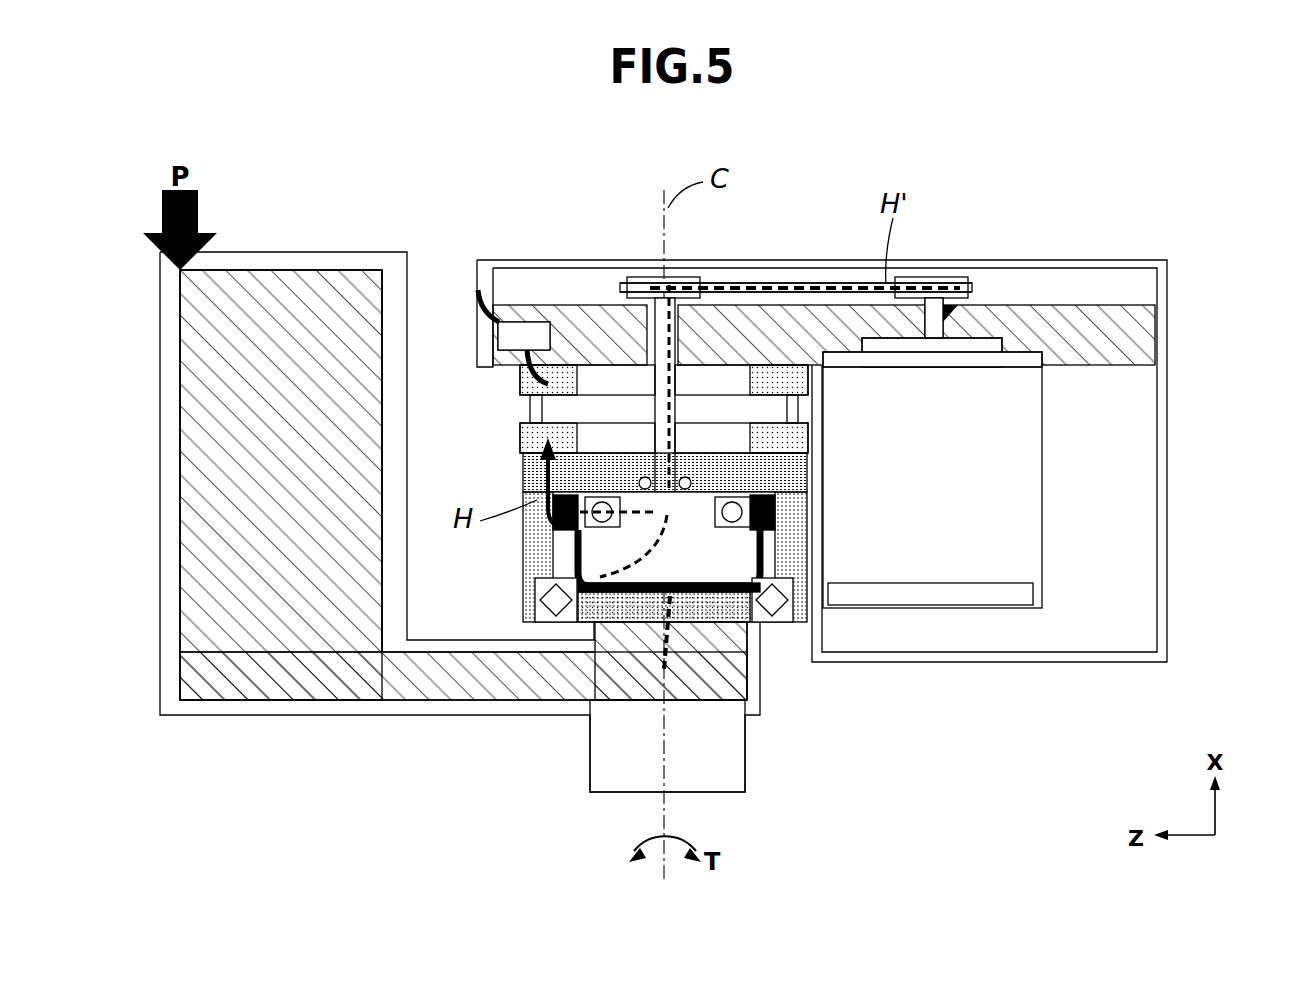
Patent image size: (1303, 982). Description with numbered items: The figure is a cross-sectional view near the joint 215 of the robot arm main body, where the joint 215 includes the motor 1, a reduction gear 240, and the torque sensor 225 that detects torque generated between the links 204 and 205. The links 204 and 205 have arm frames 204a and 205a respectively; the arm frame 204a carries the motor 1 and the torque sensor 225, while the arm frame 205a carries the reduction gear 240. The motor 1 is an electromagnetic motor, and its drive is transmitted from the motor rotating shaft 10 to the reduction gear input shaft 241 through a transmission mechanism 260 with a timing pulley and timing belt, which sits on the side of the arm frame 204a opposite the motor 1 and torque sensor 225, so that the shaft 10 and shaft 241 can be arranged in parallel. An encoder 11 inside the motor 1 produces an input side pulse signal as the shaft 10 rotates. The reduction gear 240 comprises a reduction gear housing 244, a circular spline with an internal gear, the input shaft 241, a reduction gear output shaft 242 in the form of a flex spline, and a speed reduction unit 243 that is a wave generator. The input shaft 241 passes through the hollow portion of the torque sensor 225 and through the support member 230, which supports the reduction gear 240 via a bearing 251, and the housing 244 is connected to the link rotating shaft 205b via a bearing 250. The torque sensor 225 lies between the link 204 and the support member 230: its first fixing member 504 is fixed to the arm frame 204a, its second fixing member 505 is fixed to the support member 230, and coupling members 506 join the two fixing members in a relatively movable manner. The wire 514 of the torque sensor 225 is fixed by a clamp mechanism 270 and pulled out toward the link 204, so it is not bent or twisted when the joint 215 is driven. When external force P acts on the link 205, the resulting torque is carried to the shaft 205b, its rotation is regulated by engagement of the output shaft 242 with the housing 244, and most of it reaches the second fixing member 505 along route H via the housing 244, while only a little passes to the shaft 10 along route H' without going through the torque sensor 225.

The joint 215 is at (340, 130).
The link 205 is at (140, 692).
The arm frame 205a is at (222, 418).
The link rotating shaft 205b is at (718, 640).
The link 204 is at (1203, 264).
The arm frame 204a is at (1132, 355).
The clamp mechanism 270 is at (527, 335).
The wire 514 is at (478, 291).
The transmission mechanism 260 is at (797, 274).
The motor rotating shaft 10 is at (950, 325).
The motor 1 is at (1012, 487).
The encoder 11 is at (1002, 600).
The reduction gear input shaft 241 is at (658, 335).
The torque sensor 225 is at (448, 465).
The first fixing member 504 is at (519, 384).
The coupling members 506 is at (530, 408).
The second fixing member 505 is at (530, 440).
The support member 230 is at (522, 474).
The reduction gear 240 is at (510, 550).
The bearing 250 is at (598, 590).
The reduction gear output shaft 242 is at (740, 604).
The reduction gear housing 244 is at (548, 604).
The speed reduction unit 243 is at (803, 646).
The bearing 251 is at (662, 602).